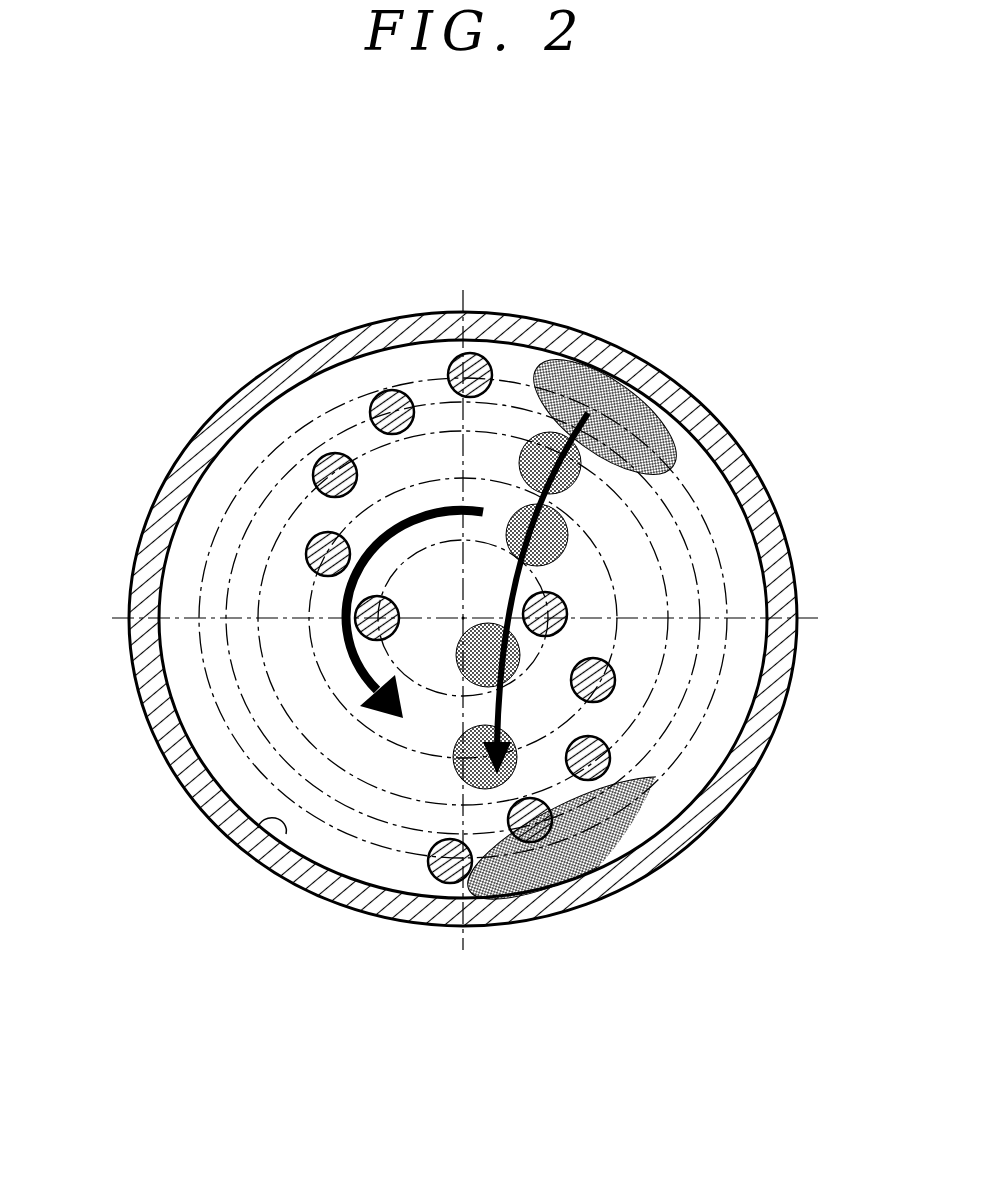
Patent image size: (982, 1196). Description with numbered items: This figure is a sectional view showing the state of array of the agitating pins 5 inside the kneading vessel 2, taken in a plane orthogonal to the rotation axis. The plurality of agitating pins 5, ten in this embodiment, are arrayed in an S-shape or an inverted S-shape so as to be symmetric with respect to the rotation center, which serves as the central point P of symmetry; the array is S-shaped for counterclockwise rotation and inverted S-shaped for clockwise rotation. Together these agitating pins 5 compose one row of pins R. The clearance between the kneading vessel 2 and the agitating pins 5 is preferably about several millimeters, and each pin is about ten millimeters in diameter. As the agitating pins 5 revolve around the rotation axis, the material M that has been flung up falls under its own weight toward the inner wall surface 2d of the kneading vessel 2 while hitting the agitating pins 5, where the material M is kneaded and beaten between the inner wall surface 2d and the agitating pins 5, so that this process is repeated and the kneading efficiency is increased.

The kneading vessel 2 is at (782, 548).
The inner wall surface 2d is at (285, 830).
The agitating pins 5 is at (382, 402).
The material M is at (610, 402).
The central point of symmetry P is at (462, 616).
The row of pins R is at (493, 356).